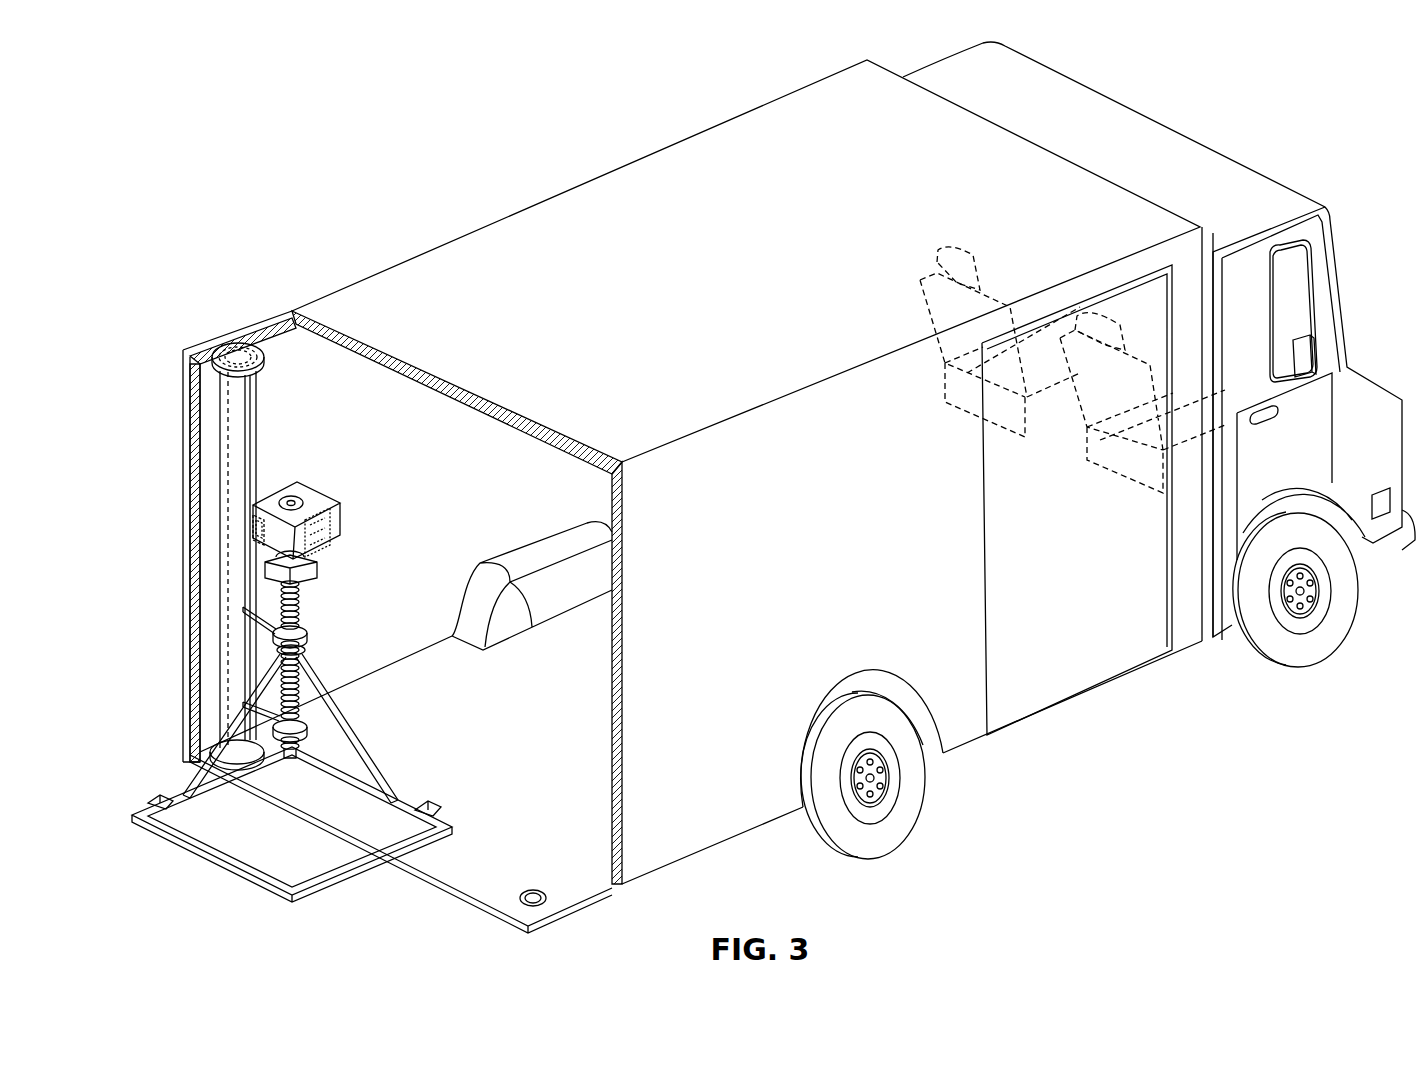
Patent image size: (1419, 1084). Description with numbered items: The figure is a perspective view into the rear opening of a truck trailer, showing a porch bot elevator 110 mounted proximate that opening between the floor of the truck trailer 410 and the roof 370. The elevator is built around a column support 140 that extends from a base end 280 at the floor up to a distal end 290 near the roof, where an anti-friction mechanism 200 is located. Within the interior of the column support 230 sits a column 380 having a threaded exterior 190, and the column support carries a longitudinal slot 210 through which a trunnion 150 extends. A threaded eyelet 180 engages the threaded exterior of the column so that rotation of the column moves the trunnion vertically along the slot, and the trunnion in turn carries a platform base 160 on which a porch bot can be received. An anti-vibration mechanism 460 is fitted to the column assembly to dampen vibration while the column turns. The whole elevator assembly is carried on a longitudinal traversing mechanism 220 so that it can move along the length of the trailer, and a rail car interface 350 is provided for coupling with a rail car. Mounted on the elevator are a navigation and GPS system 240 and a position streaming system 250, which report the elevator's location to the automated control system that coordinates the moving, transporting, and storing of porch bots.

The porch bot elevator 110 is at (229, 226).
The column support 140 is at (258, 413).
The trunnion 150 is at (284, 598).
The platform base 160 is at (323, 888).
The threaded eyelet 180 is at (278, 627).
The threaded exterior 190 is at (243, 693).
The anti-friction mechanism 200 is at (243, 347).
The longitudinal slot 210 is at (259, 517).
The longitudinal traversing mechanism 220 is at (206, 873).
The interior of the column support 230 is at (248, 465).
The navigation and GPS system 240 is at (255, 510).
The position streaming system 250 is at (318, 497).
The base end 280 is at (292, 752).
The distal end 290 is at (229, 348).
The rail car interface 350 is at (341, 517).
The roof 370 is at (452, 398).
The column 380 is at (228, 437).
The floor of the truck trailer 410 is at (590, 882).
The anti-vibration mechanism 460 is at (318, 567).